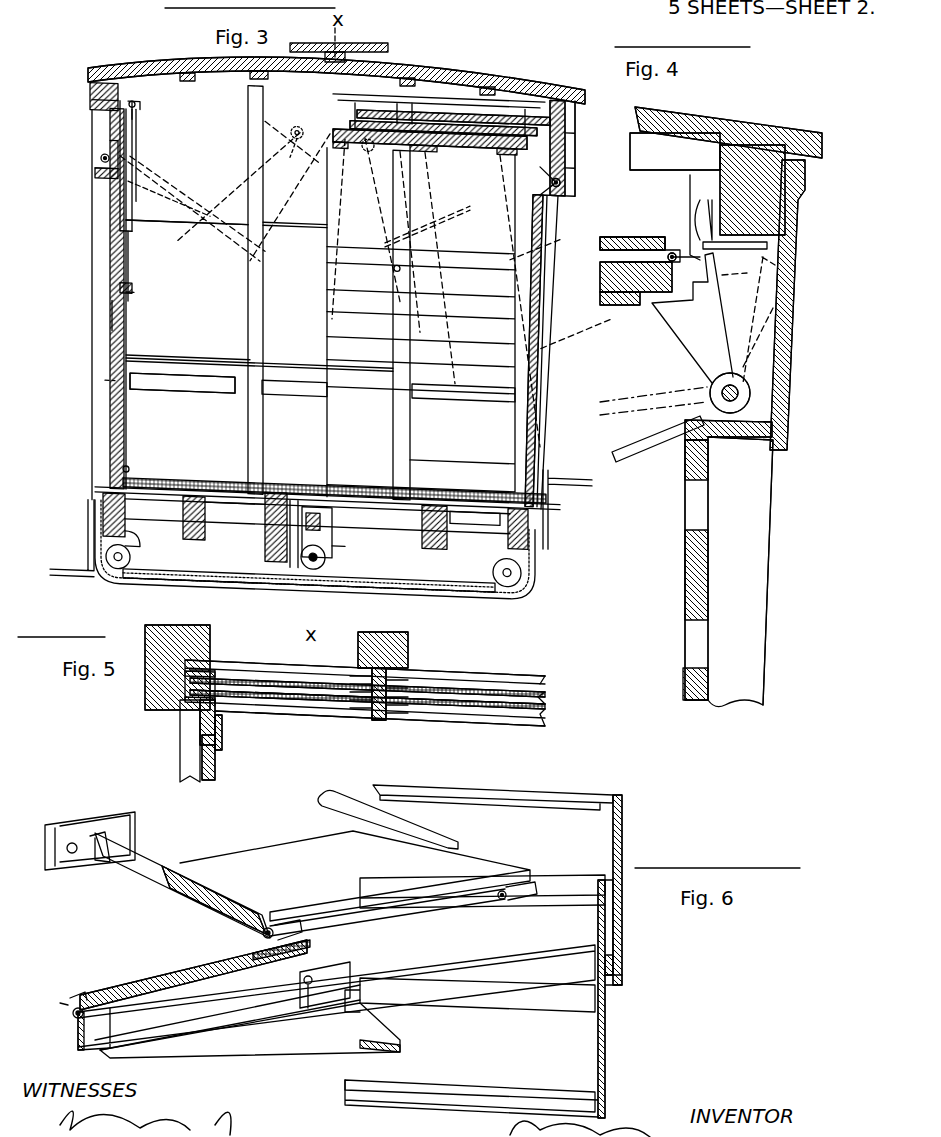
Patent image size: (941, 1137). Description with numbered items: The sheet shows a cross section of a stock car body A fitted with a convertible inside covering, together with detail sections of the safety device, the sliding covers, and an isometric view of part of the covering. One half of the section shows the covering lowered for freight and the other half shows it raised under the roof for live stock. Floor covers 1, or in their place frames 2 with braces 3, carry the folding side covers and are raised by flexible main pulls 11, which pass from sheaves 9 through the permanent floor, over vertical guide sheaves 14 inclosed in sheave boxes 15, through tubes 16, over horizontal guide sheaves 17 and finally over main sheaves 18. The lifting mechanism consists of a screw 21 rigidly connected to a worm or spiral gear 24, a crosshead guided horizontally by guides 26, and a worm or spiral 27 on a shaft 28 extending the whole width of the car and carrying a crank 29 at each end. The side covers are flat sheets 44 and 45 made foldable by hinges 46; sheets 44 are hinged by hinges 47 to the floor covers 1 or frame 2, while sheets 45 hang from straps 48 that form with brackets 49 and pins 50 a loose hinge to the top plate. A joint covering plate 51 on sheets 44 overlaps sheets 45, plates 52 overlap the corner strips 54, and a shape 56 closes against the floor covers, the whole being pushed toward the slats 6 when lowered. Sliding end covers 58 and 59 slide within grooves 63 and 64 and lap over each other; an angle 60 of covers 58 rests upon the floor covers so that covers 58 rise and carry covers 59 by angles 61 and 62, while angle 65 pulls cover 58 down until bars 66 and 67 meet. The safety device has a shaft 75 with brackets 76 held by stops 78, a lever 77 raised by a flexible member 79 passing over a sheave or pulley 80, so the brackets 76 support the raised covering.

In FIG. 3, the floor covers 1 is at (208, 476).
In FIG. 6, the frames 2 is at (130, 1025).
In FIG. 6, the braces 3 is at (330, 1045).
In FIG. 3, the slats 6 is at (112, 312).
In FIG. 4, the slats 6 is at (690, 590).
In FIG. 5, the slats 6 is at (188, 752).
In FIG. 3, the sheaves 9 is at (105, 108).
In FIG. 3, the main pull 11 is at (105, 380).
In FIG. 3, the vertical guide sheaves 14 is at (522, 565).
In FIG. 3, the sheave boxes 15 is at (128, 546).
In FIG. 3, the tubes 16 is at (212, 576).
In FIG. 3, the horizontal guide sheaves 17 is at (298, 580).
In FIG. 3, the main sheaves 18 is at (335, 565).
In FIG. 3, the screw 21 is at (302, 572).
In FIG. 3, the worm or spiral gear 24 is at (340, 537).
In FIG. 3, the guides 26 is at (420, 581).
In FIG. 3, the worm or spiral 27 is at (280, 512).
In FIG. 3, the shaft 28 is at (465, 510).
In FIG. 3, the cranks 29 is at (550, 490).
In FIG. 3, the sheets 44 is at (120, 409).
In FIG. 4, the sheets 44 is at (610, 250).
In FIG. 5, the sheets 44 is at (218, 775).
In FIG. 6, the sheets 44 is at (150, 990).
In FIG. 3, the sheets 45 is at (130, 243).
In FIG. 6, the sheets 45 is at (355, 876).
In FIG. 3, the hinges 46 is at (118, 287).
In FIG. 6, the hinges 46 is at (262, 933).
In FIG. 3, the hinges 47 is at (128, 468).
In FIG. 4, the hinges 47 is at (605, 298).
In FIG. 6, the hinges 47 is at (75, 1018).
In FIG. 3, the straps 48 is at (138, 158).
In FIG. 6, the straps 48 is at (150, 850).
In FIG. 3, the brackets 49 is at (140, 103).
In FIG. 4, the brackets 49 is at (632, 140).
In FIG. 6, the brackets 49 is at (80, 830).
In FIG. 3, the pins 50 is at (138, 110).
In FIG. 6, the pins 50 is at (100, 850).
In FIG. 3, the joint covering plate 51 is at (135, 291).
In FIG. 6, the joint covering plate 51 is at (340, 920).
In FIG. 5, the plates 52 is at (222, 735).
In FIG. 5, the corner strips 54 is at (205, 718).
In FIG. 4, the shape 56 is at (672, 240).
In FIG. 6, the shape 56 is at (70, 995).
In FIG. 5, the sliding end covers 58 is at (547, 720).
In FIG. 6, the sliding end covers 58 is at (567, 999).
In FIG. 3, the sliding end covers 59 is at (210, 317).
In FIG. 5, the sliding end covers 59 is at (547, 695).
In FIG. 3, the angle 60 is at (210, 386).
In FIG. 3, the angle 61 is at (200, 352).
In FIG. 6, the angle 61 is at (560, 878).
In FIG. 3, the angle 62 is at (222, 219).
In FIG. 6, the angle 62 is at (535, 790).
In FIG. 5, the grooves 63 is at (185, 690).
In FIG. 3, the grooves 64 is at (258, 308).
In FIG. 5, the grooves 64 is at (380, 718).
In FIG. 6, the angle 65 is at (470, 1092).
In FIG. 6, the bar 66 is at (618, 885).
In FIG. 6, the bar 67 is at (650, 980).
In FIG. 3, the shaft 75 is at (100, 172).
In FIG. 4, the shaft 75 is at (762, 395).
In FIG. 3, the brackets 76 is at (112, 142).
In FIG. 4, the brackets 76 is at (700, 330).
In FIG. 3, the lever 77 is at (170, 197).
In FIG. 4, the stops 78 is at (700, 228).
In FIG. 3, the flexible member 79 is at (262, 206).
In FIG. 3, the sheave or pulley 80 is at (292, 141).
In FIG. 4, the body of a stock car A is at (755, 530).